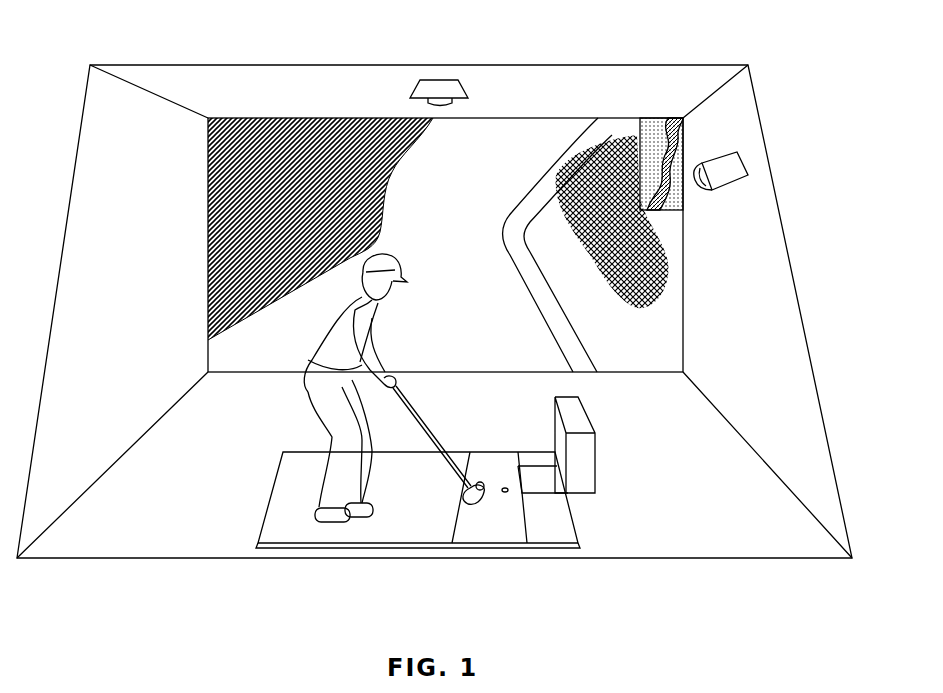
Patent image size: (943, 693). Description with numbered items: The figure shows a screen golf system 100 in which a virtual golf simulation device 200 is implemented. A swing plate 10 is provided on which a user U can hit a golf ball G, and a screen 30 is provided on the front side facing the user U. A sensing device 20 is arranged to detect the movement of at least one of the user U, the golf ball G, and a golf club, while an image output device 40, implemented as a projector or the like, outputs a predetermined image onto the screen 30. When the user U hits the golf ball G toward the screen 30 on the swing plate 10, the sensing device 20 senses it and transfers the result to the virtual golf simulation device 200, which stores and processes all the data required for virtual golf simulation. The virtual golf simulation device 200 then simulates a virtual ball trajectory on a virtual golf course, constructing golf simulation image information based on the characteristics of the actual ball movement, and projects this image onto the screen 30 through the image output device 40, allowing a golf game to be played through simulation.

The screen golf system 100 is at (838, 59).
The swing plate 10 is at (390, 548).
The sensing device 20 is at (723, 153).
The screen 30 is at (206, 260).
The image output device 40 is at (468, 90).
The virtual golf simulation device 200 is at (596, 456).
The golf ball G is at (474, 484).
The user U is at (305, 375).